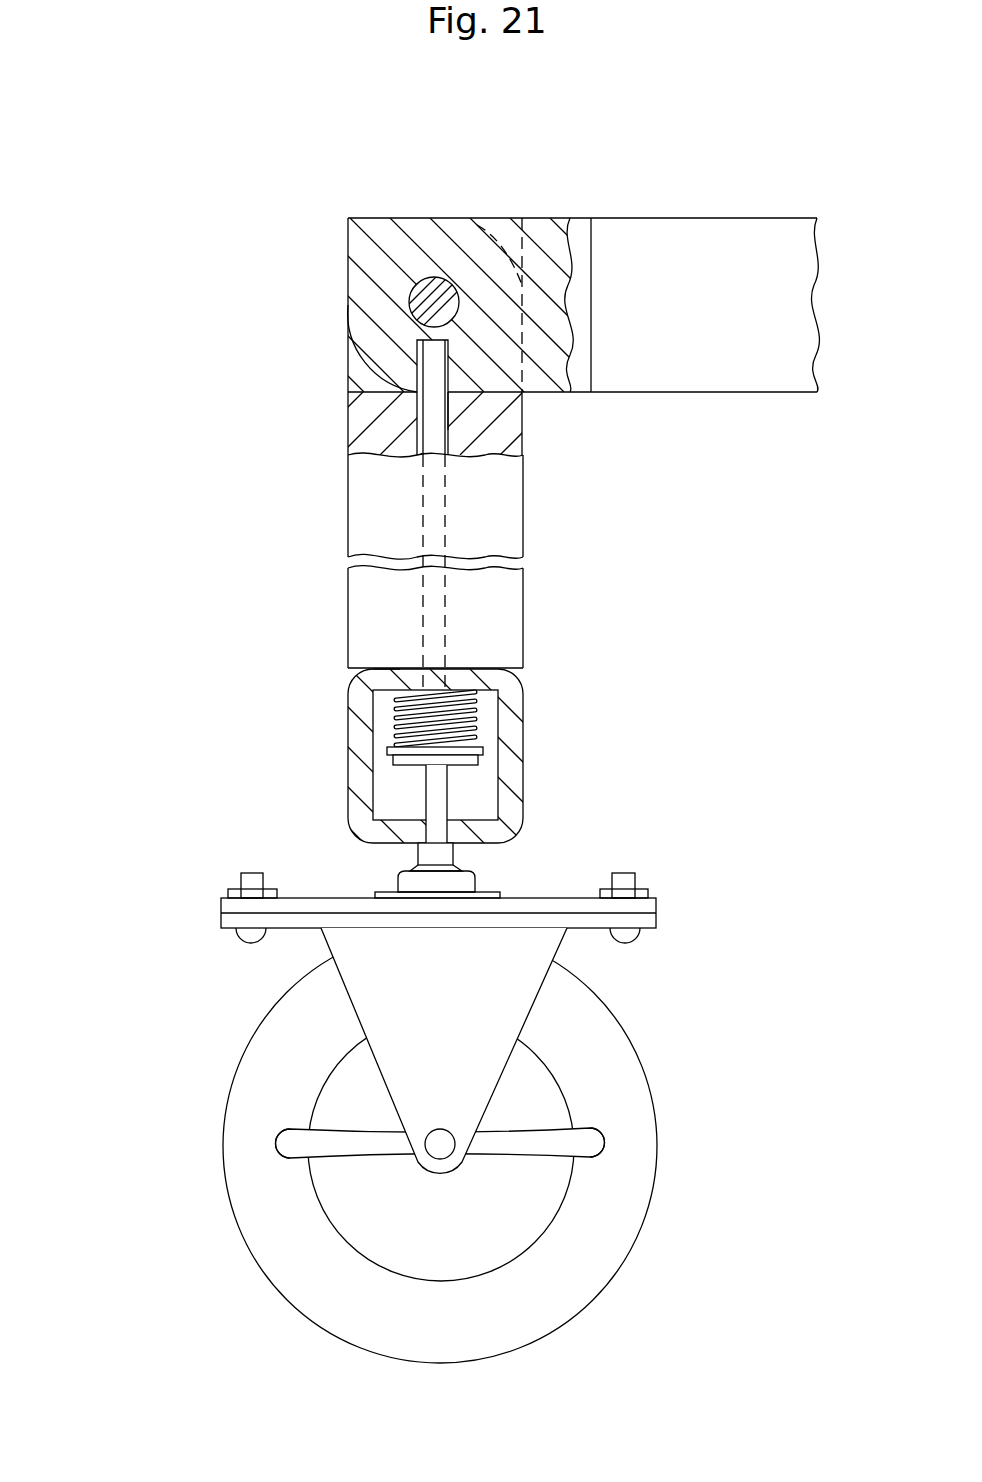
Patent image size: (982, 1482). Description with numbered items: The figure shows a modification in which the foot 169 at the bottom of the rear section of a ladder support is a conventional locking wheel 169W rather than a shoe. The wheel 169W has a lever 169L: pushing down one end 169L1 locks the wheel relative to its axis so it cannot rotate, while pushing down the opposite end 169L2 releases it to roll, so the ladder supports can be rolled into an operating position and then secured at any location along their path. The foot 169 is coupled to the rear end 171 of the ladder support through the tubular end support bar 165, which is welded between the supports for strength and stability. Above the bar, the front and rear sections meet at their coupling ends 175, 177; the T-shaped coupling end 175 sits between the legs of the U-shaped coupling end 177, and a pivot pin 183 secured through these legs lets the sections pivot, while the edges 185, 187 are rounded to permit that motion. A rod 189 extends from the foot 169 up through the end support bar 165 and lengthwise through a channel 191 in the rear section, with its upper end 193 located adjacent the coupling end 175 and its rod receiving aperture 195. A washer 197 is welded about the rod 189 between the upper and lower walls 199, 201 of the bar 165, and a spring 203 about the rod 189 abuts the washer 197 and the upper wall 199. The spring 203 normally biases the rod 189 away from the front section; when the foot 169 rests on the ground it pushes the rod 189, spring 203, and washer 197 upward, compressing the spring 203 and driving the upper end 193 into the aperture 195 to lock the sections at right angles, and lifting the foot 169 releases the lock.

The tubular end support bar 165 is at (523, 758).
The foot 169 is at (454, 1127).
The locking wheel 169W is at (271, 1240).
The lever 169L is at (466, 1233).
The one end of the lever 169L1 is at (276, 1140).
The opposite end of the lever 169L2 is at (602, 1127).
The rear end 171 is at (523, 692).
The coupling end of the front section 175 is at (577, 228).
The coupling end of the rear section 177 is at (388, 513).
The pivot pin 183 is at (410, 300).
The edge of coupling end 185 is at (375, 375).
The edge of coupling end 187 is at (502, 235).
The rod 189 is at (437, 438).
The channel 191 is at (452, 410).
The upper end of the rod 193 is at (430, 352).
The rod receiving aperture 195 is at (453, 362).
The washer 197 is at (385, 760).
The upper wall 199 is at (400, 668).
The lower wall 201 is at (392, 843).
The spring 203 is at (395, 727).